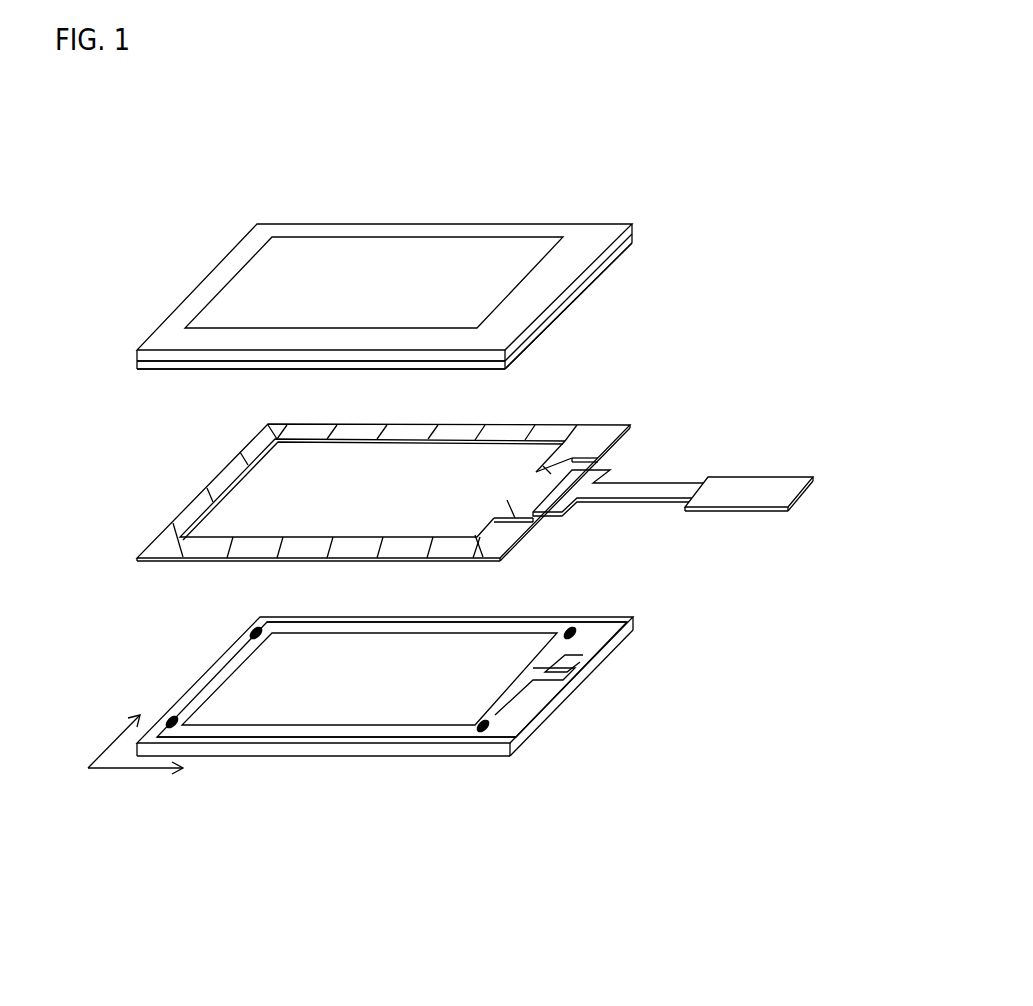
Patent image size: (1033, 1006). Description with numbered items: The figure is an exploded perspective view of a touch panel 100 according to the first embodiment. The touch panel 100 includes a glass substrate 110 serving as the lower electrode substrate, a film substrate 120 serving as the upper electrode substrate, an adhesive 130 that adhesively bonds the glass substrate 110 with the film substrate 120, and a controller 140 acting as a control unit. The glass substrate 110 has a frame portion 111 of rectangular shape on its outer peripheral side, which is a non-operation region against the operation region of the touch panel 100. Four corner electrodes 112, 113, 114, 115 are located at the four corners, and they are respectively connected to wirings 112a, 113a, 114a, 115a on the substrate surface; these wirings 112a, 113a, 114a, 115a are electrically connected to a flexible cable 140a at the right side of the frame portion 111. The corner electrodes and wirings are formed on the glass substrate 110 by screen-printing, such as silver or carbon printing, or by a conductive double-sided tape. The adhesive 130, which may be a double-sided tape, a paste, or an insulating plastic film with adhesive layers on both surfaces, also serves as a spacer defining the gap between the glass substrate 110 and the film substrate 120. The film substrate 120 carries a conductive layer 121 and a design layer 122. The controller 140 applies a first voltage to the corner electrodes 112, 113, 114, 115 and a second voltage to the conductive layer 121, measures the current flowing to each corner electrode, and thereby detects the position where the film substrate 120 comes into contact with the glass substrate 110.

The touch panel 100 is at (131, 110).
The glass substrate 110 is at (338, 778).
The frame portion 111 is at (232, 660).
The corner electrode 112 is at (172, 720).
The wiring 112a is at (343, 738).
The corner electrode 113 is at (255, 633).
The wiring 113a is at (445, 622).
The corner electrode 114 is at (577, 632).
The wiring 114a is at (543, 663).
The corner electrode 115 is at (485, 727).
The wiring 115a is at (510, 697).
The film substrate 120 is at (415, 268).
The conductive layer 121 is at (157, 368).
The design layer 122 is at (137, 358).
The adhesive 130 is at (538, 398).
The controller 140 is at (743, 513).
The flexible cable 140a is at (633, 482).